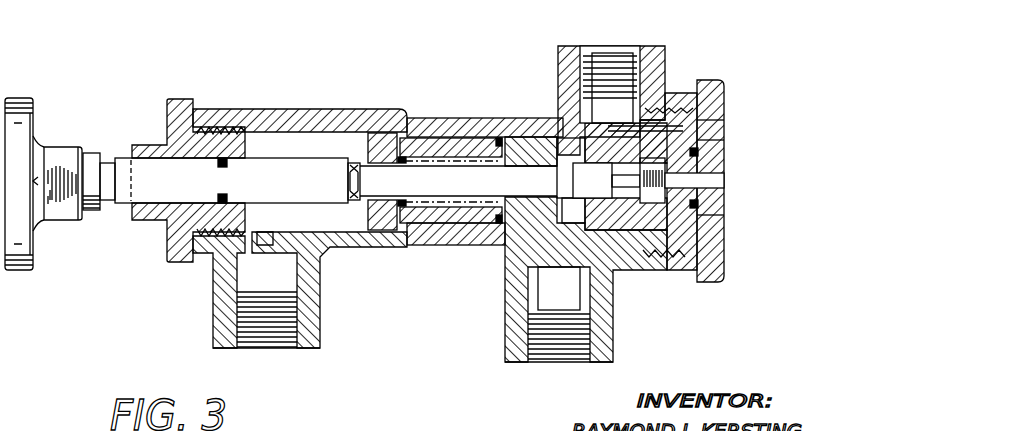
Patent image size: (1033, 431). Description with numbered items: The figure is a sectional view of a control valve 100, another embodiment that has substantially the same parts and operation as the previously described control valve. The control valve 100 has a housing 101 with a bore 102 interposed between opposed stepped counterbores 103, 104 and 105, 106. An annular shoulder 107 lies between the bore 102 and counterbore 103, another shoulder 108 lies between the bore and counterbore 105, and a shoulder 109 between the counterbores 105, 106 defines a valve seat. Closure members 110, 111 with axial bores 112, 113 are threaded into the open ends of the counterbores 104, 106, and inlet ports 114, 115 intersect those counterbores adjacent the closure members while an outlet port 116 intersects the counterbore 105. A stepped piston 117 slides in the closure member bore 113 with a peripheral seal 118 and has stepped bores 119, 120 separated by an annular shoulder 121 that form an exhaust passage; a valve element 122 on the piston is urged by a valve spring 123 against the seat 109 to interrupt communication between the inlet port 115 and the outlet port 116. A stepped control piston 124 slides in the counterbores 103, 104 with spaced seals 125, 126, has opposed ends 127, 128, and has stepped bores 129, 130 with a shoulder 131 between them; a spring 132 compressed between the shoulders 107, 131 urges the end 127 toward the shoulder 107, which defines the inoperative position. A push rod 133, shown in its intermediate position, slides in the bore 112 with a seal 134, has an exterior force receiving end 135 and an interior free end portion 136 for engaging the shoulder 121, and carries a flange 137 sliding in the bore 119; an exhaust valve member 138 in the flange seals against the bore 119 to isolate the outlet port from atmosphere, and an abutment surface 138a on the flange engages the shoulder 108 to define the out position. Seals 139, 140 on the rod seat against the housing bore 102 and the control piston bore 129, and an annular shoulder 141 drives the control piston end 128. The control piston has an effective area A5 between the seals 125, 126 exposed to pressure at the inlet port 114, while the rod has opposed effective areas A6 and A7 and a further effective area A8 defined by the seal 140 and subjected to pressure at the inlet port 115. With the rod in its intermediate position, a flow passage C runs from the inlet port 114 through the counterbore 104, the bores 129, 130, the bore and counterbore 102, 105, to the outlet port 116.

The control valve 100 is at (209, 288).
The housing 101 is at (222, 321).
The bore 102 is at (531, 144).
The counterbore 103 is at (430, 118).
The counterbore 104 is at (256, 108).
The counterbore 105 is at (562, 137).
The counterbore 106 is at (668, 95).
The annular shoulder 107 is at (490, 125).
The annular shoulder 108 is at (586, 279).
The annular shoulder 109 is at (555, 240).
The closure member 110 is at (172, 100).
The closure member 111 is at (725, 273).
The axial bore 112 is at (136, 165).
The axial bore 113 is at (715, 204).
The inlet port 114 is at (250, 340).
The inlet port 115 is at (584, 50).
The outlet port 116 is at (536, 360).
The stepped piston 117 is at (715, 142).
The peripheral seal 118 is at (716, 150).
The stepped bore 119 is at (662, 228).
The stepped bore 120 is at (724, 180).
The annular shoulder 121 is at (715, 216).
The annular valve element 122 is at (560, 118).
The valve spring 123 is at (724, 122).
The stepped control piston 124 is at (440, 253).
The peripheral seal 125 is at (492, 245).
The peripheral seal 126 is at (384, 232).
The abutment surface 127 is at (526, 213).
The abutment surface 128 is at (385, 133).
The stepped bore 129 is at (451, 163).
The stepped bore 130 is at (451, 197).
The annular shoulder 131 is at (386, 181).
The spring 132 is at (486, 138).
The push rod 133 is at (107, 220).
The peripheral seal 134 is at (226, 196).
The force receiving portion 135 is at (62, 160).
The free end portion 136 is at (678, 130).
The radially extending flange 137 is at (612, 122).
The exhaust valve member 138 is at (618, 250).
The abutment surface 138a is at (598, 200).
The peripheral seal 139 is at (458, 181).
The peripheral seal 140 is at (350, 210).
The annular shoulder 141 is at (348, 165).
The annular effective area A5 is at (413, 151).
The annular effective area A6 is at (310, 170).
The annular effective area A7 is at (605, 145).
The effective area A8 is at (368, 230).
The pressure fluid flow passage C is at (292, 224).